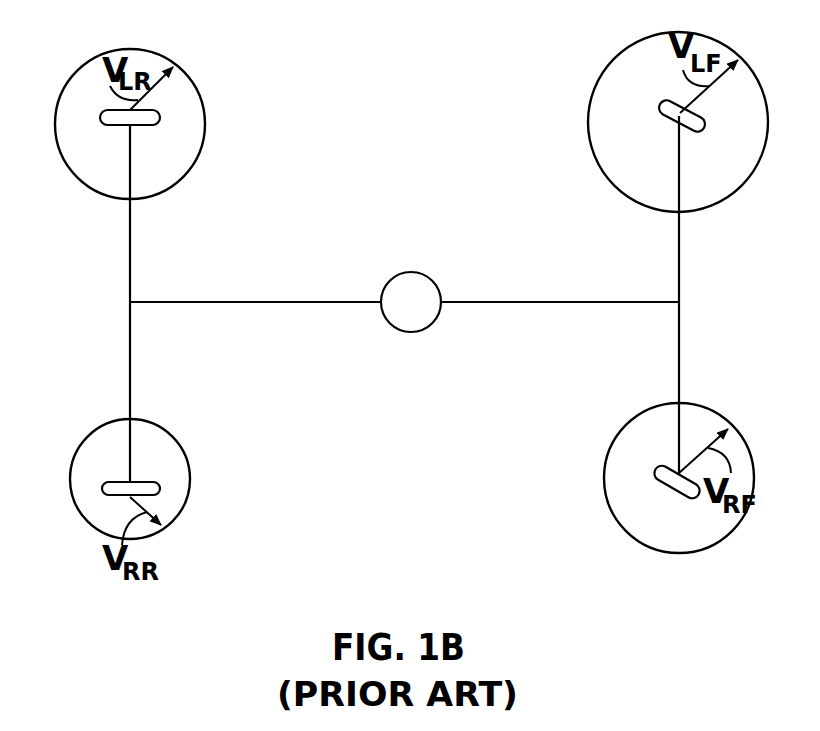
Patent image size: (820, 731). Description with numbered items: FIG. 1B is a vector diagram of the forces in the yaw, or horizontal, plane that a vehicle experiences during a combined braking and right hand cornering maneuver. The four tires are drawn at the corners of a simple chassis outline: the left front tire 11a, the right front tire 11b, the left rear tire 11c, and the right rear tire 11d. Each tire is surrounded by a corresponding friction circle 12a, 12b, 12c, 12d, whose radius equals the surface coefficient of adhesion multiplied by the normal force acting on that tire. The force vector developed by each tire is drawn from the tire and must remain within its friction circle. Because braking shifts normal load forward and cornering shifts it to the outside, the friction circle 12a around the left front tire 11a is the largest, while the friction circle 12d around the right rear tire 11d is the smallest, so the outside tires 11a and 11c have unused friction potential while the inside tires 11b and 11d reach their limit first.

The left front tire 11a is at (657, 108).
The right front tire 11b is at (670, 487).
The left rear tire 11c is at (100, 117).
The right rear tire 11d is at (102, 488).
The friction circle 12a is at (588, 122).
The friction circle 12b is at (604, 478).
The friction circle 12c is at (206, 123).
The friction circle 12d is at (190, 478).